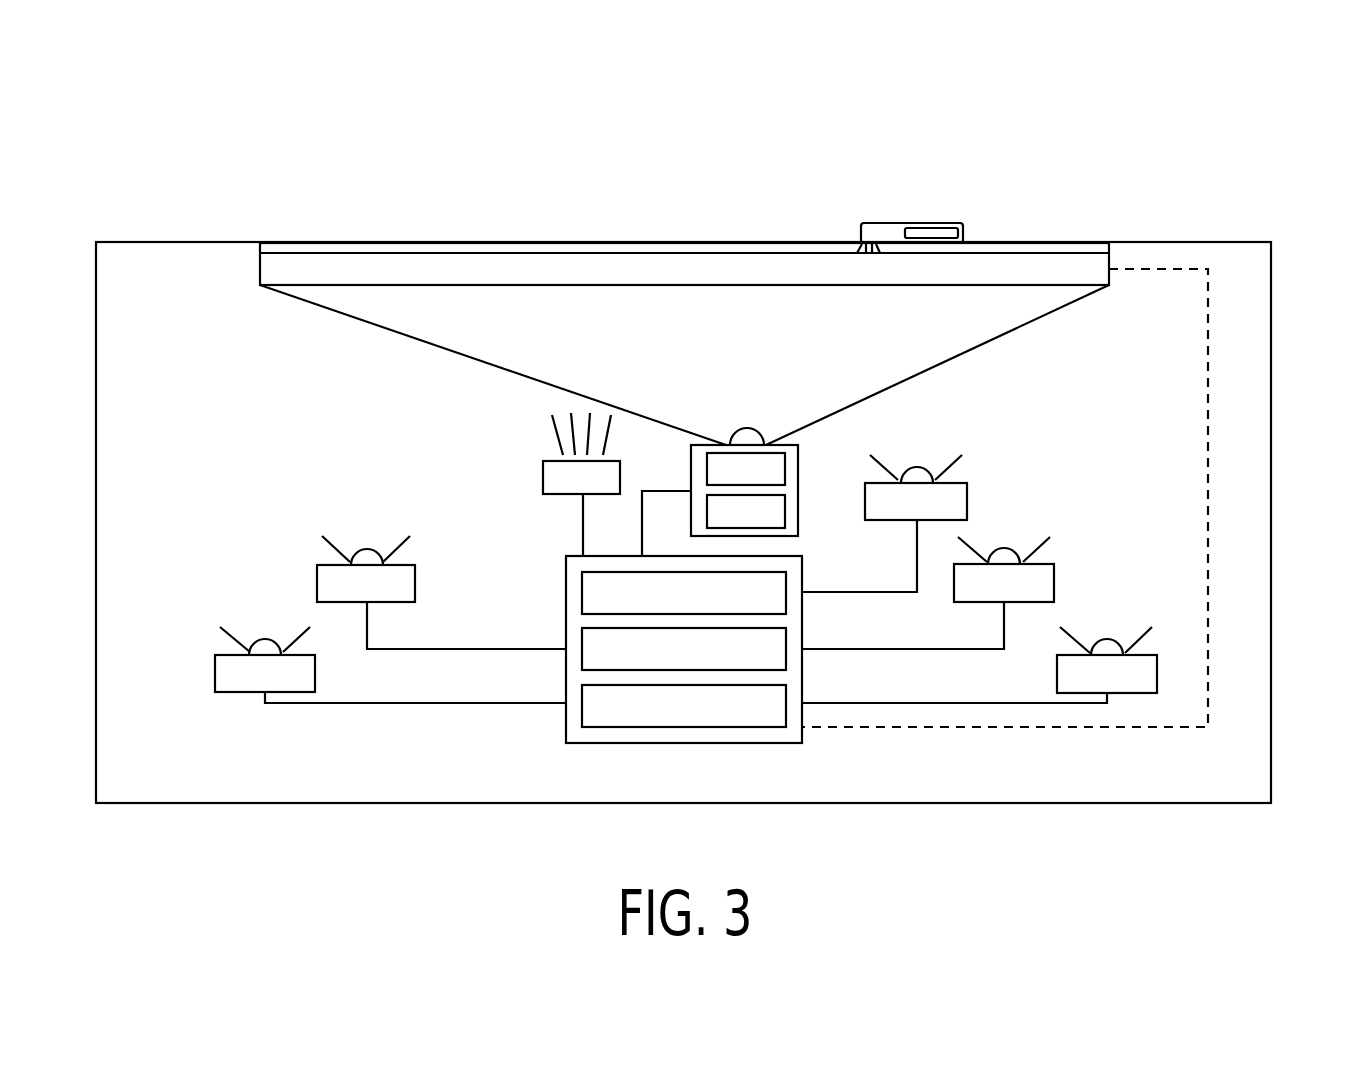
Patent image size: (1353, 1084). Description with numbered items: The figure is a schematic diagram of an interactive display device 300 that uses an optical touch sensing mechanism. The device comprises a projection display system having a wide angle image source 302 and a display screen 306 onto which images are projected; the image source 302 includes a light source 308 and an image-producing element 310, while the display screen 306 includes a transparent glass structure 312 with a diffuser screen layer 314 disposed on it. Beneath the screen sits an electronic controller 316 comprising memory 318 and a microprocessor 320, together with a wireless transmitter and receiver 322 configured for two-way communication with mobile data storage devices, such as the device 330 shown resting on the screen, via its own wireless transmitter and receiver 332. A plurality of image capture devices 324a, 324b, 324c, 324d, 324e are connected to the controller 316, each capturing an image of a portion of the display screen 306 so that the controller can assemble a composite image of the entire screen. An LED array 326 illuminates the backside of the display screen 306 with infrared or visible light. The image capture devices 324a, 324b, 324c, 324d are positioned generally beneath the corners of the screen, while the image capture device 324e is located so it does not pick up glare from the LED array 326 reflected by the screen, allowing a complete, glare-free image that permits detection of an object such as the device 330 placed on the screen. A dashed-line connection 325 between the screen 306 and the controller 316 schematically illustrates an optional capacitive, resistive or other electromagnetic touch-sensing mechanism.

The interactive display device 300 is at (196, 154).
The wide angle image source 302 is at (798, 470).
The display screen 306 is at (325, 236).
The light source 308 is at (785, 508).
The image-producing element 310 is at (691, 468).
The transparent glass structure 312 is at (428, 270).
The diffuser screen layer 314 is at (513, 252).
The electronic controller 316 is at (566, 725).
The memory 318 is at (582, 587).
The microprocessor 320 is at (786, 641).
The wireless transmitter and receiver 322 is at (786, 698).
The image capture device 324a is at (232, 680).
The image capture device 324b is at (330, 582).
The image capture device 324c is at (1040, 584).
The image capture device 324d is at (1138, 679).
The image capture device 324e is at (955, 502).
The dashed-line connection 325 is at (1208, 447).
The LED array 326 is at (543, 478).
The mobile data storage device 330 is at (876, 233).
The wireless transmitter and receiver 332 is at (932, 232).